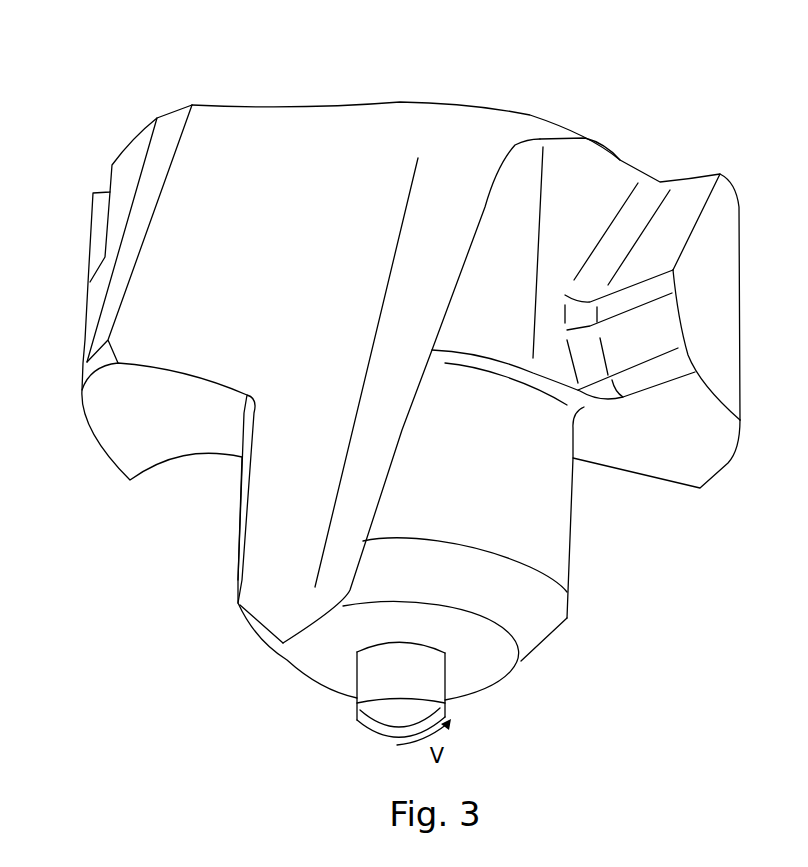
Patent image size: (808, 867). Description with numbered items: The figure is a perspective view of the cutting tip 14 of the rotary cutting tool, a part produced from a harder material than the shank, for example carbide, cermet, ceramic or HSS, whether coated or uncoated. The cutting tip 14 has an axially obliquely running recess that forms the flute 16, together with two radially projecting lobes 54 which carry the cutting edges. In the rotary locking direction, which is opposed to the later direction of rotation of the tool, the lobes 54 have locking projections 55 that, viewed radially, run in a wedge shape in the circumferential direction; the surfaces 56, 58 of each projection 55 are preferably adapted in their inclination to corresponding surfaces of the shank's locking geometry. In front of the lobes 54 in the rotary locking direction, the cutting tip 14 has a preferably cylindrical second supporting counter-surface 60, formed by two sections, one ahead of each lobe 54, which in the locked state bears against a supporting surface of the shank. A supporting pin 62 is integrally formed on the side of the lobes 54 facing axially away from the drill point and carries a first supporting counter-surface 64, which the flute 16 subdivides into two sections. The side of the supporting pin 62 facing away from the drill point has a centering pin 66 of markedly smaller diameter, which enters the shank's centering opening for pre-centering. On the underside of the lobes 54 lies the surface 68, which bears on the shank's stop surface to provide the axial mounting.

The cutting tip 14 is at (450, 93).
The flute 16 is at (460, 158).
The lobes 54 is at (204, 94).
The locking projections 55 is at (683, 313).
The surface of locking projection 56 is at (662, 338).
The surface of locking projection 58 is at (680, 223).
The second supporting counter-surface 60 is at (553, 171).
The supporting pin 62 is at (582, 571).
The first supporting counter-surface 64 is at (573, 509).
The centering pin 66 is at (454, 711).
The surface 68 is at (707, 450).